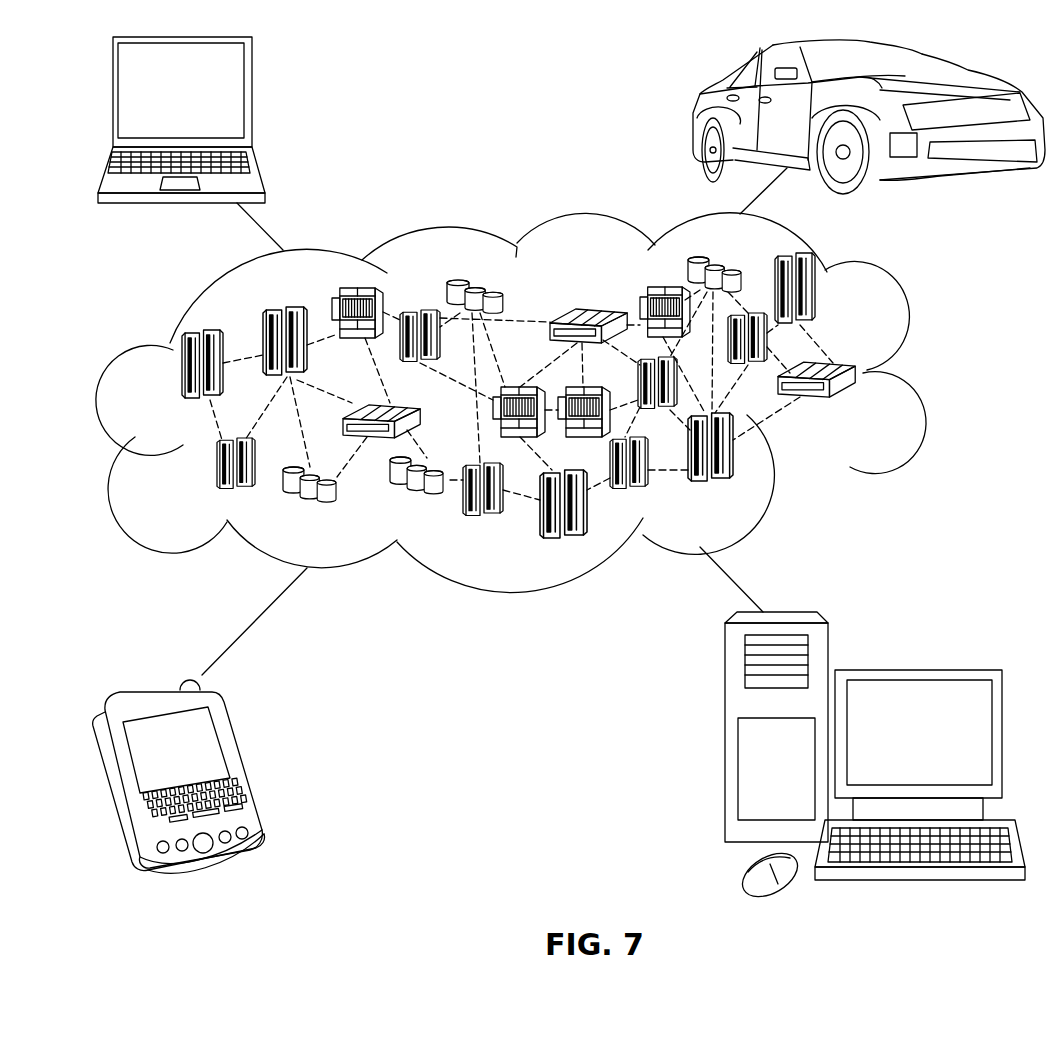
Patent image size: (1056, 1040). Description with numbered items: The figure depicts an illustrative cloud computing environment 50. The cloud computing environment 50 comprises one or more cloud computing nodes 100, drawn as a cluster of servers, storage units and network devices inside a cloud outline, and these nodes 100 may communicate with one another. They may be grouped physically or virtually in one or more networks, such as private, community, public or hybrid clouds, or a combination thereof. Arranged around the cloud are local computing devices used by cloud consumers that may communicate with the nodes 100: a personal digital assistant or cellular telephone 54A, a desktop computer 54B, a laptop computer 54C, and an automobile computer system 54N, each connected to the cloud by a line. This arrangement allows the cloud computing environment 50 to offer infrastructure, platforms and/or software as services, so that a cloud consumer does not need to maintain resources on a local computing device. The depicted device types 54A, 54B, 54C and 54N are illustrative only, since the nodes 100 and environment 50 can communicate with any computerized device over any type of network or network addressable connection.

The cloud computing environment 50 is at (913, 375).
The cloud computing nodes 100 is at (862, 407).
The personal digital assistant or cellular telephone 54A is at (242, 763).
The desktop computer 54B is at (917, 668).
The laptop computer 54C is at (252, 100).
The automobile computer system 54N is at (697, 115).